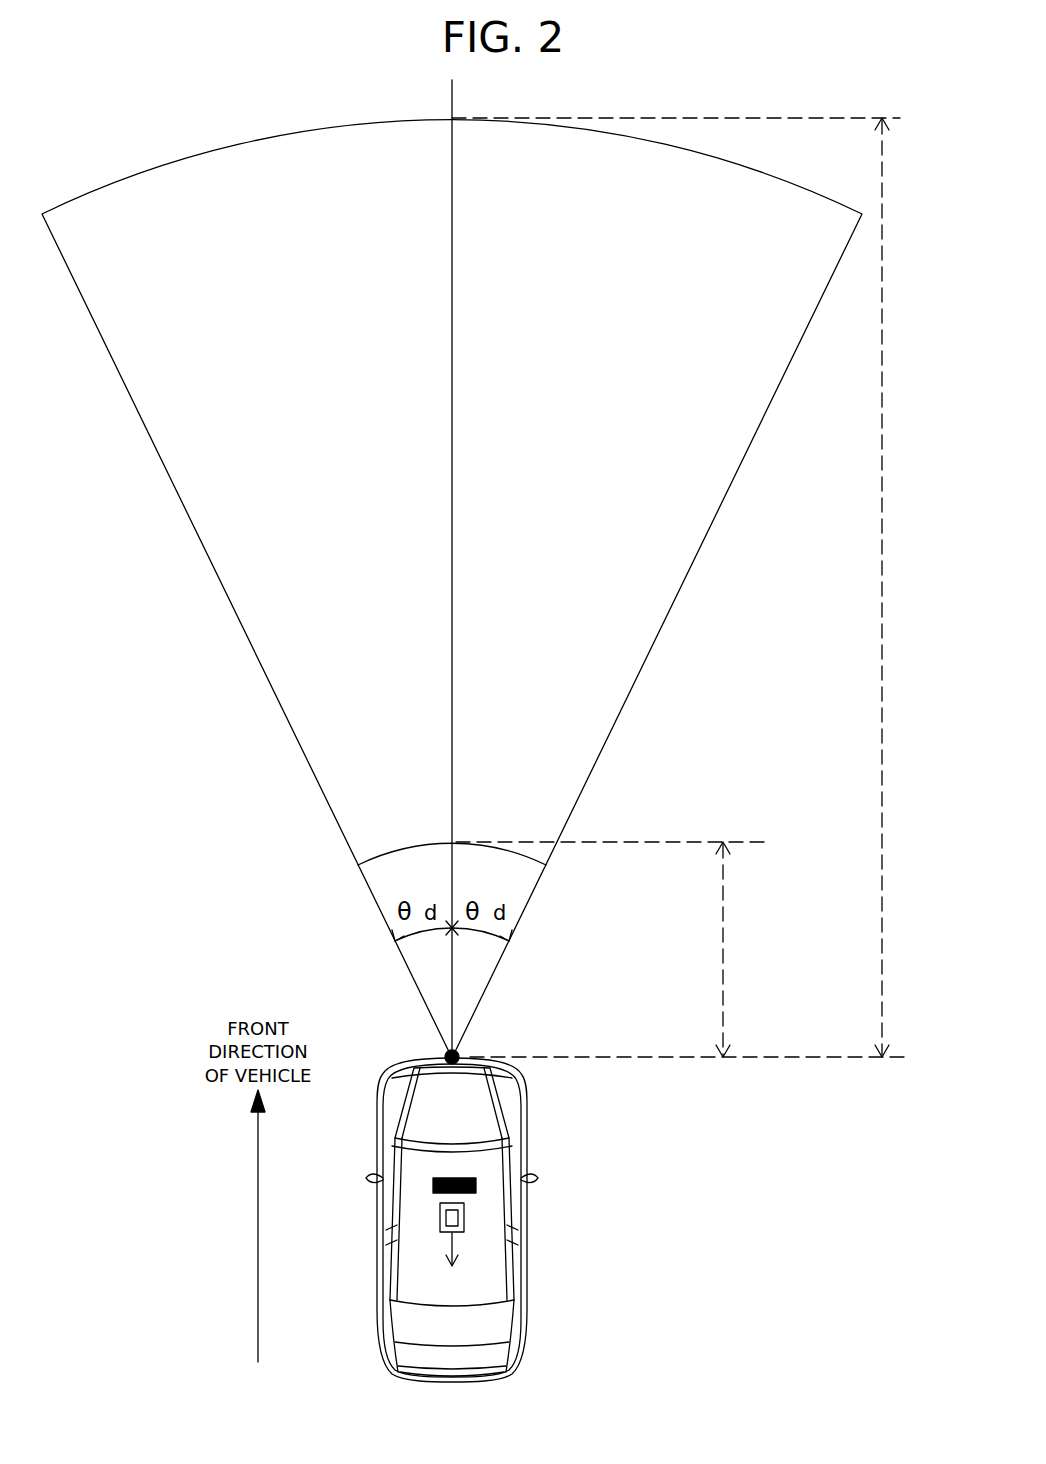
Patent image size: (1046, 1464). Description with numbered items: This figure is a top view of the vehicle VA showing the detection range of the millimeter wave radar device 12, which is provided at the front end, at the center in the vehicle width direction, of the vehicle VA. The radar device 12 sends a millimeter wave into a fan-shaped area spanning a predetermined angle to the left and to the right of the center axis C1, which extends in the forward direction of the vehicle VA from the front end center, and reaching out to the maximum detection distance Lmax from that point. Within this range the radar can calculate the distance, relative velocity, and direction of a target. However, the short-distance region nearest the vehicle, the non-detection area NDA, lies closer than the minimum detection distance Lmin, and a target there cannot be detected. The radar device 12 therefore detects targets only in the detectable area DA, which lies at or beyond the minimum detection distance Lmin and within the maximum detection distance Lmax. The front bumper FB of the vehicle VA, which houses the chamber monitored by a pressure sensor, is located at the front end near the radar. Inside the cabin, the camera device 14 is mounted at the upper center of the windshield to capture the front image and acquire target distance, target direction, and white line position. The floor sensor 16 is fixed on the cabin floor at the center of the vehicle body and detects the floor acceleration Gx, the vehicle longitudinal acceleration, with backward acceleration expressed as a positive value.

The millimeter wave radar device 12 is at (447, 1054).
The camera device 14 is at (431, 1179).
The floor sensor 16 is at (465, 1216).
The detectable area DA is at (368, 123).
The non-detection area NDA is at (372, 900).
The center axis C1 is at (455, 96).
The front bumper FB is at (405, 1067).
The vehicle VA is at (527, 1198).
The maximum detection distance Lmax is at (915, 587).
The minimum detection distance Lmin is at (750, 949).
The floor acceleration Gx is at (439, 1265).